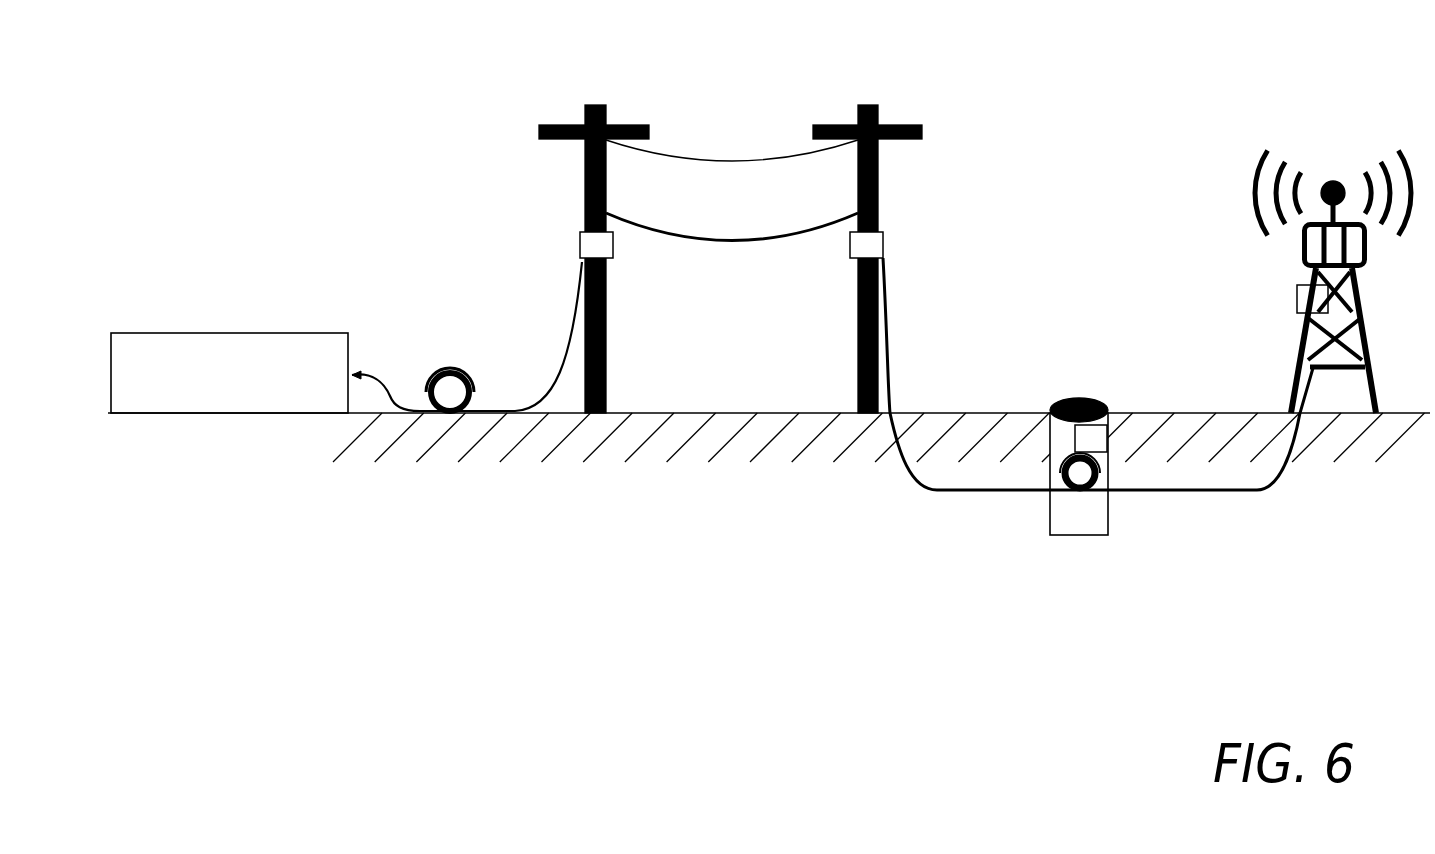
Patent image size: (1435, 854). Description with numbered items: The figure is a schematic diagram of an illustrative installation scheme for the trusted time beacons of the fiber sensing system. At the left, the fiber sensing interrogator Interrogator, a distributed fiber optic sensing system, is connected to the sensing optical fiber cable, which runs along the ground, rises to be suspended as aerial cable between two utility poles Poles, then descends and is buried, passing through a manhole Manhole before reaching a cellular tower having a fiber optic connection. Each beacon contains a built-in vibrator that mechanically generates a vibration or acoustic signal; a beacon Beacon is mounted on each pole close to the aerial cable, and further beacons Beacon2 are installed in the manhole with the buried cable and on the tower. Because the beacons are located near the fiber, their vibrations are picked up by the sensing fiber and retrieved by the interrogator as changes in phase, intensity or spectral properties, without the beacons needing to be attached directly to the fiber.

The fiber sensing interrogator Interrogator is at (229, 373).
The utility poles Poles is at (837, 125).
The trusted time beacon Beacon is at (840, 258).
The trusted time beacon Beacon2 is at (1297, 302).
The manhole Manhole is at (1108, 513).